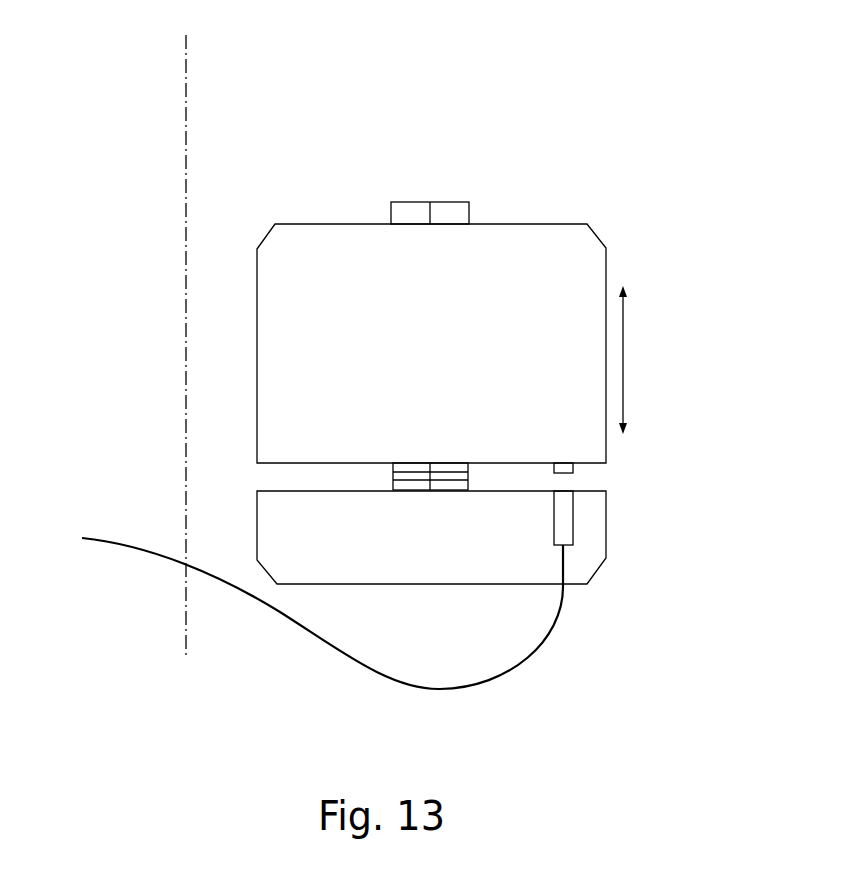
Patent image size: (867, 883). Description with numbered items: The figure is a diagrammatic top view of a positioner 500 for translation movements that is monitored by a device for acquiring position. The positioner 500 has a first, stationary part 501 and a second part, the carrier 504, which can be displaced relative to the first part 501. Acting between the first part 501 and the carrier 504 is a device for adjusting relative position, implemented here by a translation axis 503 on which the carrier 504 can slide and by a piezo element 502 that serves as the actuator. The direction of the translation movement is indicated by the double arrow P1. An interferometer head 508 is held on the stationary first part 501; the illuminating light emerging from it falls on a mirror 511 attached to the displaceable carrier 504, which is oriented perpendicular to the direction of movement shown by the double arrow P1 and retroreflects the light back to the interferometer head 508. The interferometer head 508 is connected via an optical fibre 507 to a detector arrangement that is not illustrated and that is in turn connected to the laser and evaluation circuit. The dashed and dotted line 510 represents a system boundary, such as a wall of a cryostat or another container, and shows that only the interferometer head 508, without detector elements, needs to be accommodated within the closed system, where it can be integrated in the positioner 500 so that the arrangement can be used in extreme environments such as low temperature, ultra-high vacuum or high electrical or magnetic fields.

The positioner 500 is at (508, 86).
The first, stationary part 501 is at (423, 567).
The piezo element 502 is at (393, 484).
The translation axis 503 is at (457, 213).
The carrier 504 is at (452, 316).
The optical fibre 507 is at (130, 547).
The interferometer head 508 is at (574, 513).
The system boundary 510 is at (186, 140).
The mirror 511 is at (563, 462).
The double arrow P1 is at (623, 358).